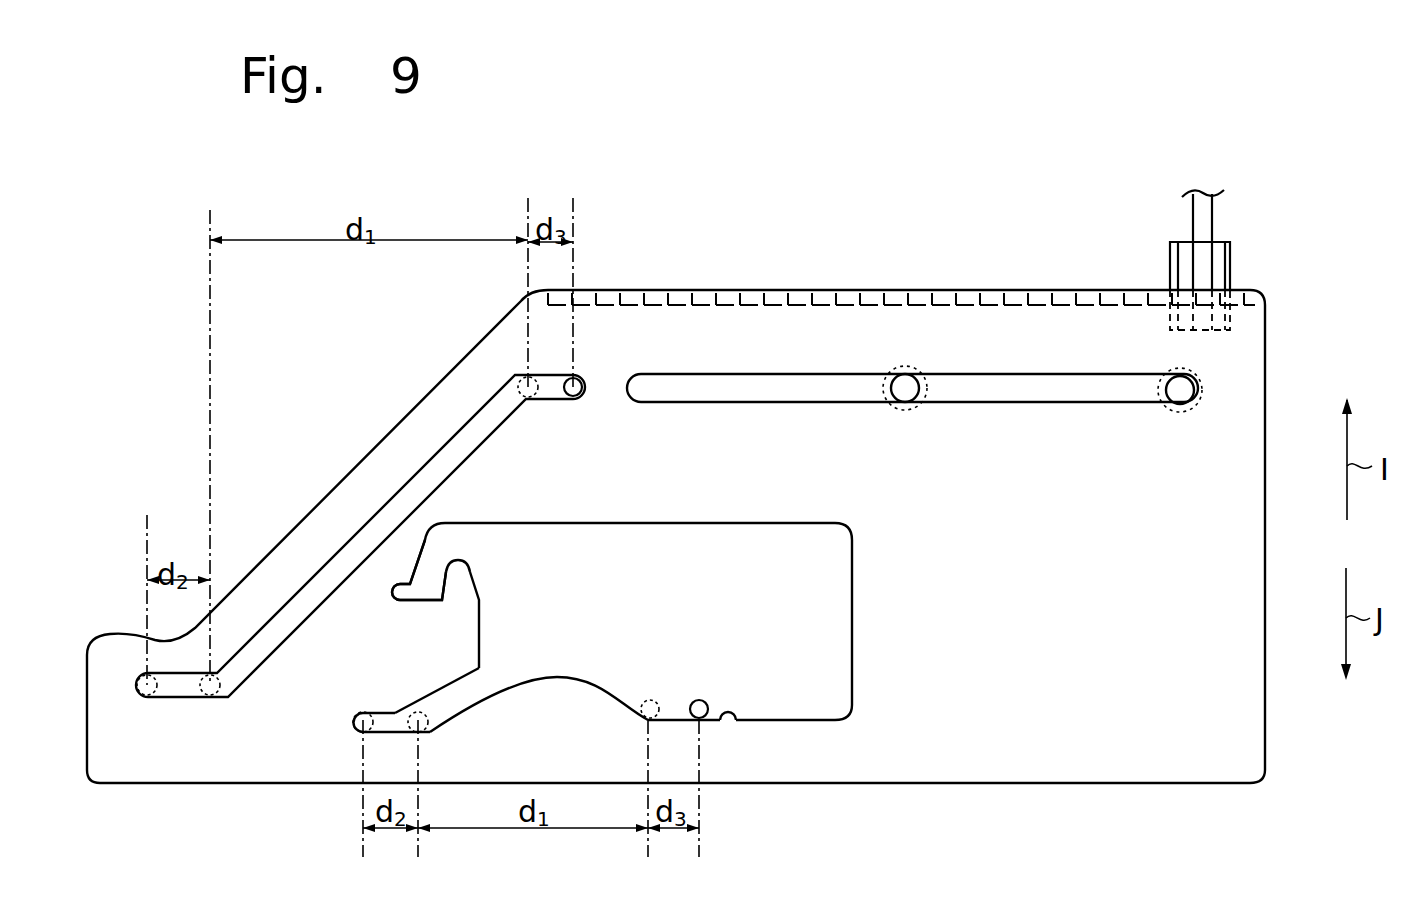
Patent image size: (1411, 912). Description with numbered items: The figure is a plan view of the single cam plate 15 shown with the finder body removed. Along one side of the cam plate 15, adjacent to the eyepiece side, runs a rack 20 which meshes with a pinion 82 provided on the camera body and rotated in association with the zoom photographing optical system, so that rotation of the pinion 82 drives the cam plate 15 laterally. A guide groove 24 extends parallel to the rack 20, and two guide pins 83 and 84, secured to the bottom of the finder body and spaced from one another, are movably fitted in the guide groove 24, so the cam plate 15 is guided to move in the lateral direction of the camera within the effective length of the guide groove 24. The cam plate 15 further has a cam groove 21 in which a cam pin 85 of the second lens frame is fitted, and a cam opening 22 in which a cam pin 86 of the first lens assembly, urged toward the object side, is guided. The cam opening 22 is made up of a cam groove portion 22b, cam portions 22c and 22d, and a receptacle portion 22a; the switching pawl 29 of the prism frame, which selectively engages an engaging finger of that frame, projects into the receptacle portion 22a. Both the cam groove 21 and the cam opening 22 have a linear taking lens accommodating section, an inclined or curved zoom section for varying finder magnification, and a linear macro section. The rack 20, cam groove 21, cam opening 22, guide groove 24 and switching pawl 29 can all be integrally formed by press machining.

The cam plate 15 is at (1111, 248).
The rack 20 is at (852, 290).
The cam groove 21 is at (433, 482).
The cam opening 22 is at (593, 642).
The receptacle portion 22a is at (425, 572).
The cam groove portion 22b is at (458, 700).
The cam portion 22c is at (570, 690).
The cam portion 22d is at (738, 723).
The guide groove 24 is at (1007, 384).
The switching pawl 29 is at (475, 576).
The pinion 82 is at (1228, 270).
The guide pin 83 is at (1183, 390).
The guide pin 84 is at (900, 372).
The cam pin 85 is at (575, 397).
The cam pin 86 is at (674, 671).